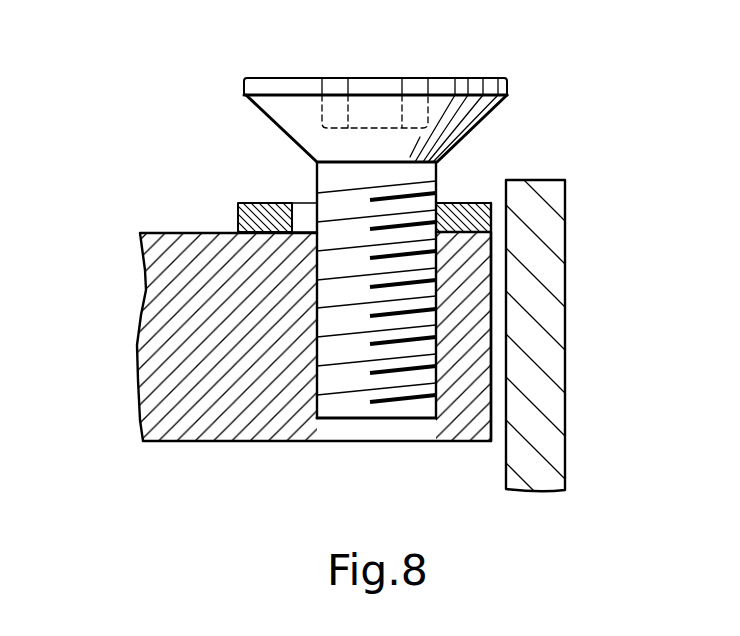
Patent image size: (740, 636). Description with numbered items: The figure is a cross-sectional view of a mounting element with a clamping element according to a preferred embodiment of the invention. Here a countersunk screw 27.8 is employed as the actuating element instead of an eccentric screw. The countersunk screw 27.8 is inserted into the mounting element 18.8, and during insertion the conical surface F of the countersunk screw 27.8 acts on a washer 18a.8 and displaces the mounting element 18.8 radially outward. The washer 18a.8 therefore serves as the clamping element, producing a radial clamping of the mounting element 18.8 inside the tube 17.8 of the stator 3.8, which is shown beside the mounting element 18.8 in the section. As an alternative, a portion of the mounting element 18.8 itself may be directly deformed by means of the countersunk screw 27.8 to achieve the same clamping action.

The conical surface F is at (340, 212).
The countersunk screw 27.8 is at (453, 100).
The tube 17.8 is at (492, 190).
The mounting element 18.8 is at (160, 296).
The washer 18a.8 is at (247, 217).
The stator 3.8 is at (552, 277).